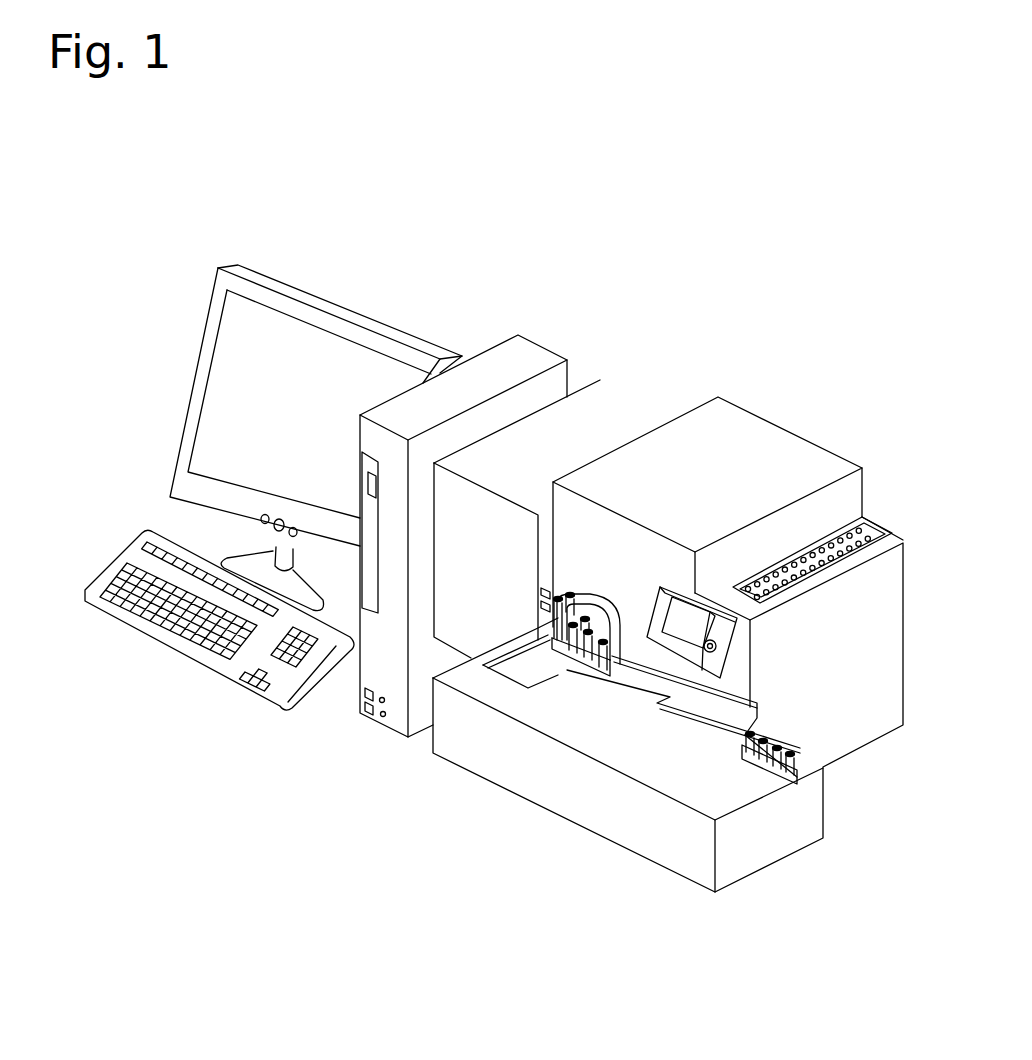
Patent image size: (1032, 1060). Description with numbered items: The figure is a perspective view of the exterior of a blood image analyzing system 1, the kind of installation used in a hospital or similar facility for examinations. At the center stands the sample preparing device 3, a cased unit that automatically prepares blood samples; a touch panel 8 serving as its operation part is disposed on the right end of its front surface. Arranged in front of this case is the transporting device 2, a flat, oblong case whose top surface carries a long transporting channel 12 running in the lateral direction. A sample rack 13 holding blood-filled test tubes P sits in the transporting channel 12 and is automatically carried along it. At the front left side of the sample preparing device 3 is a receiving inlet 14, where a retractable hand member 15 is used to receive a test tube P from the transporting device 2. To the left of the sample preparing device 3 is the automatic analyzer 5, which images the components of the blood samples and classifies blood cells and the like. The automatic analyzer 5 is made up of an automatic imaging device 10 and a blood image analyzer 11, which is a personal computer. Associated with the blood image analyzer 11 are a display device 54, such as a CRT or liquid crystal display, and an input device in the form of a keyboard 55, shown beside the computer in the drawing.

The blood image analyzing system 1 is at (810, 275).
The transporting device 2 is at (555, 798).
The sample preparing device 3 is at (773, 423).
The automatic analyzer 5 is at (702, 275).
The touch panel 8 is at (686, 620).
The automatic imaging device 10 is at (601, 371).
The blood image analyzer 11 is at (456, 321).
The transporting channel 12 is at (632, 688).
The sample rack 13 is at (800, 783).
The receiving inlet 14 is at (592, 612).
The hand member 15 is at (586, 593).
The display device 54 is at (232, 378).
The keyboard 55 is at (125, 553).
The test tube P is at (550, 625).